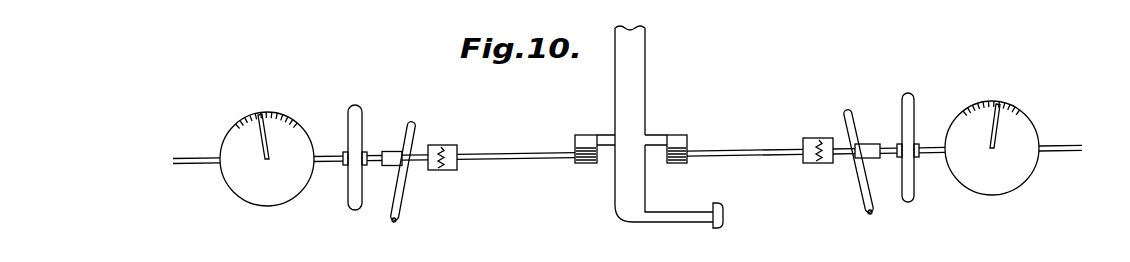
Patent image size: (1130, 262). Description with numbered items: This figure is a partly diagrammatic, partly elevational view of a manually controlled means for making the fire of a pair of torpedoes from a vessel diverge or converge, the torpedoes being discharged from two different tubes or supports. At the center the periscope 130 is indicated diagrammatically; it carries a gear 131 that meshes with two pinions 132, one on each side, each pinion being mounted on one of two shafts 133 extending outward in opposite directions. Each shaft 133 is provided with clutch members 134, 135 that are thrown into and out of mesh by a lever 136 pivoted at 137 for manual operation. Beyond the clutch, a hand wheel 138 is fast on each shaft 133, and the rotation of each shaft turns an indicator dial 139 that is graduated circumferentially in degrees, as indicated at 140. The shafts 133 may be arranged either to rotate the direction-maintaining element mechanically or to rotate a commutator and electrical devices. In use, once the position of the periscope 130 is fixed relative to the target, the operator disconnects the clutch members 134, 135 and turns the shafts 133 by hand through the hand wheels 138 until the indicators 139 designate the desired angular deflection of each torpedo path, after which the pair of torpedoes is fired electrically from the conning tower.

The periscope 130 is at (637, 95).
The gear 131 is at (582, 136).
The pinion 132 is at (585, 164).
The shaft 133 is at (516, 159).
The clutch member 134 is at (452, 147).
The clutch member 135 is at (437, 171).
The lever 136 is at (408, 123).
The pivot 137 is at (396, 221).
The hand wheel 138 is at (357, 113).
The indicator dial 139 is at (262, 139).
The graduations in degrees 140 is at (283, 113).